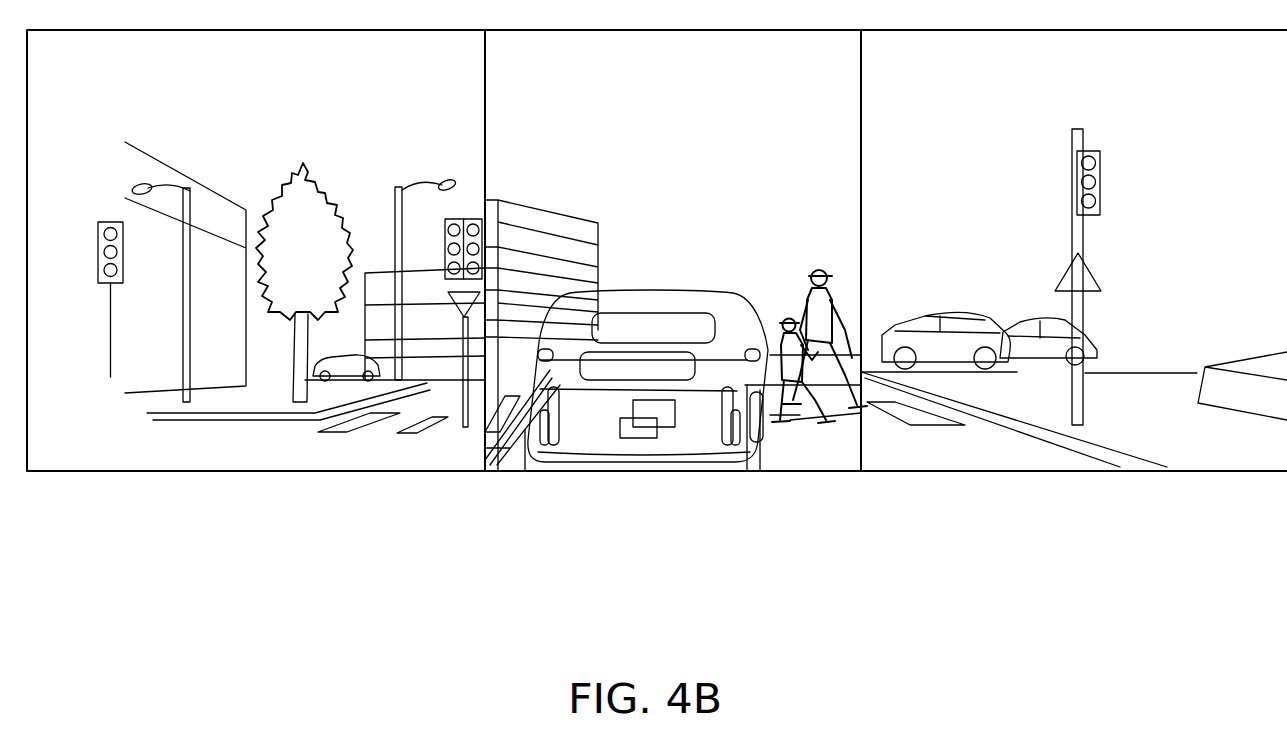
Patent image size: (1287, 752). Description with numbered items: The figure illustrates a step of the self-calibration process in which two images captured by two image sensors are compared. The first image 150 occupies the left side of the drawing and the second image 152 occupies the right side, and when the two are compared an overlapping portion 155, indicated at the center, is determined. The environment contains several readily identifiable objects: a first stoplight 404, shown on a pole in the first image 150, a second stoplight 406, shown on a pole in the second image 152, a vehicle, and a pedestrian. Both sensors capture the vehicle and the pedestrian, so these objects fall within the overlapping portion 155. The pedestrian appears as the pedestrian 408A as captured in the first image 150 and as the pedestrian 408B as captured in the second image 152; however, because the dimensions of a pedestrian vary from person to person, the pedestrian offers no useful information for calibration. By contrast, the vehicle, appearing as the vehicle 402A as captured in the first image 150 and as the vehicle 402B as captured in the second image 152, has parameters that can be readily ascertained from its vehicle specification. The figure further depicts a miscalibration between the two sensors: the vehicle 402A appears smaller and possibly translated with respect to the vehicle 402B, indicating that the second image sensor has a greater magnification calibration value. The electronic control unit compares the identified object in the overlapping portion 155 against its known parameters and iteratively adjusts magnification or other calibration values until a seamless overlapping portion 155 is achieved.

The first image 150 is at (253, 472).
The second image 152 is at (1150, 472).
The overlapping portion 155 is at (657, 319).
The vehicle as captured in the first image 402A is at (536, 472).
The vehicle as captured in the second image 402B is at (655, 290).
The first stoplight 404 is at (456, 219).
The second stoplight 406 is at (1100, 182).
The pedestrian as captured in the first image 408A is at (780, 320).
The pedestrian as captured in the second image 408B is at (813, 268).